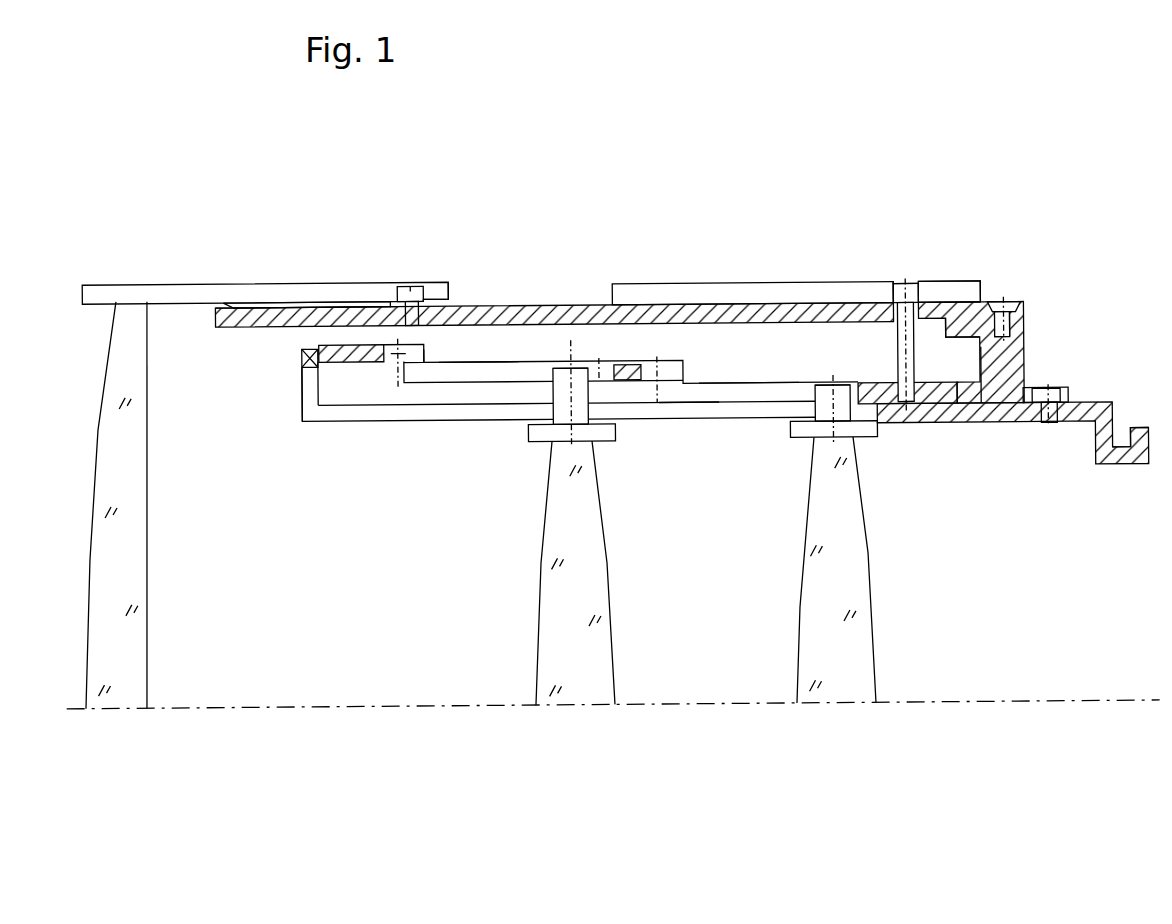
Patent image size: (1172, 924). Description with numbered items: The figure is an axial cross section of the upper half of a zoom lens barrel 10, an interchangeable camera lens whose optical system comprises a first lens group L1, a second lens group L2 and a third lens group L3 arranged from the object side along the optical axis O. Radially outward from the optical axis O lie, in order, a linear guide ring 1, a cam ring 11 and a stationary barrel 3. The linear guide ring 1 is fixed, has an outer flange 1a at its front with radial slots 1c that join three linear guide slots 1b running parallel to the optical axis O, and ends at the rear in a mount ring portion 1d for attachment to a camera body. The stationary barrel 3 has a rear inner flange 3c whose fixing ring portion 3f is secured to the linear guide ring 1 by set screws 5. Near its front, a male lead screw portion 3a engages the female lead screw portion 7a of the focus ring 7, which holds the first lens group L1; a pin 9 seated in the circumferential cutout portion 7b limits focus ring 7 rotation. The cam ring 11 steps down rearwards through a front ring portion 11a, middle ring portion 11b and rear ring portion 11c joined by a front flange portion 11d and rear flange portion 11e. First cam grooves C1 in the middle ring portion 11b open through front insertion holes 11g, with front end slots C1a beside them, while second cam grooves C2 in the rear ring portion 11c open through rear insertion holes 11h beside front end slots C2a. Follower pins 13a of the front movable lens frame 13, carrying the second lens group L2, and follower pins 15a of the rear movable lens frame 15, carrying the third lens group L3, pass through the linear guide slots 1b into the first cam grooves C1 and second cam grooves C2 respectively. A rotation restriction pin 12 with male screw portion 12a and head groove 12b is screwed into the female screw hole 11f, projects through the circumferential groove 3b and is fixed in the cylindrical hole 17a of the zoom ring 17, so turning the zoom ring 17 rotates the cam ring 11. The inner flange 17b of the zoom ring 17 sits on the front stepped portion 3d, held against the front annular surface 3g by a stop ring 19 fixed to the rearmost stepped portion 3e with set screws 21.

The zoom lens barrel 10 is at (580, 107).
The linear guide ring 1 is at (988, 426).
The outer flange 1a is at (302, 353).
The linear guide slots 1b is at (338, 420).
The radial slots 1c is at (306, 401).
The mount ring portion 1d is at (1141, 434).
The stationary barrel 3 is at (501, 303).
The male lead screw portion 3a is at (291, 303).
The circumferential groove 3b is at (899, 315).
The inner flange 3c is at (1018, 407).
The front stepped portion 3d is at (980, 305).
The rearmost stepped portion 3e is at (1022, 313).
The fixing ring portion 3f is at (1069, 401).
The front annular surface 3g is at (952, 308).
The set screws 5 is at (1052, 391).
The focus ring 7 is at (339, 299).
The female lead screw portion 7a is at (311, 297).
The circumferential cutout portion 7b is at (443, 284).
The pin 9 is at (423, 284).
The cam ring 11 is at (608, 361).
The front ring portion 11a is at (369, 342).
The middle ring portion 11b is at (469, 359).
The rear ring portion 11c is at (746, 384).
The front flange portion 11d is at (431, 362).
The rear flange portion 11e is at (704, 304).
The female screw hole 11f is at (900, 409).
The front insertion holes 11g is at (409, 363).
The rear insertion holes 11h is at (682, 400).
The rotation restriction pin 12 is at (924, 303).
The male screw portion 12a is at (909, 426).
The groove 12b is at (912, 300).
The front movable lens frame 13 is at (541, 441).
The follower pins 13a is at (580, 366).
The rear movable lens frame 15 is at (802, 439).
The follower pins 15a is at (832, 388).
The zoom ring 17 is at (957, 303).
The cylindrical hole 17a is at (895, 302).
The inner flange 17b is at (972, 304).
The stop ring 19 is at (1027, 305).
The set screws 21 is at (1015, 305).
The first cam grooves C1 is at (481, 367).
The front end slots C1a is at (406, 287).
The second cam grooves C2 is at (753, 392).
The front end slots C2a is at (667, 364).
The first lens group L1 is at (116, 693).
The second lens group L2 is at (573, 698).
The third lens group L3 is at (840, 700).
The optical axis O is at (276, 704).